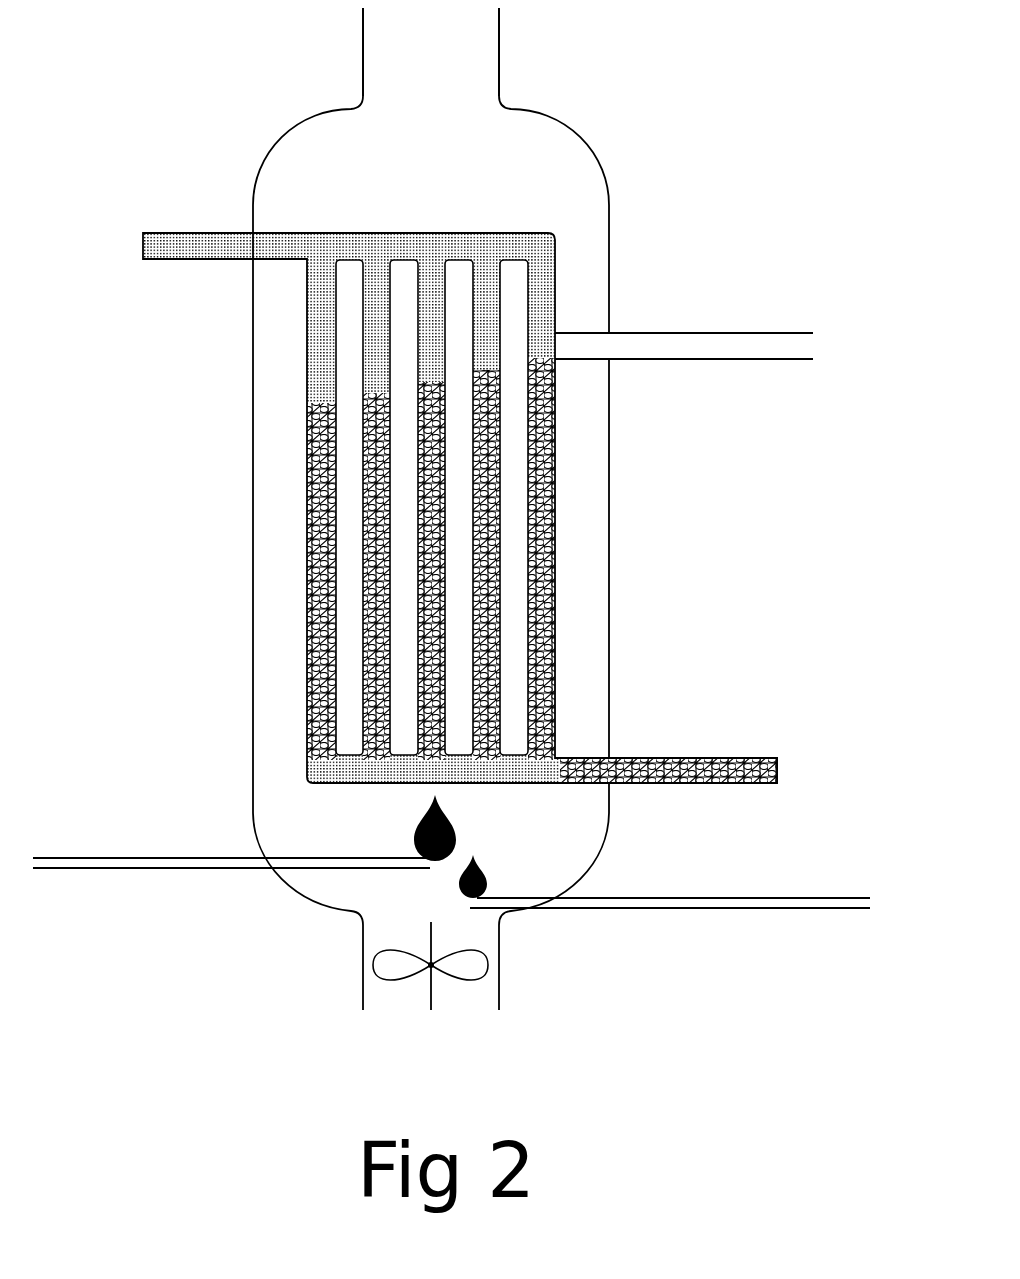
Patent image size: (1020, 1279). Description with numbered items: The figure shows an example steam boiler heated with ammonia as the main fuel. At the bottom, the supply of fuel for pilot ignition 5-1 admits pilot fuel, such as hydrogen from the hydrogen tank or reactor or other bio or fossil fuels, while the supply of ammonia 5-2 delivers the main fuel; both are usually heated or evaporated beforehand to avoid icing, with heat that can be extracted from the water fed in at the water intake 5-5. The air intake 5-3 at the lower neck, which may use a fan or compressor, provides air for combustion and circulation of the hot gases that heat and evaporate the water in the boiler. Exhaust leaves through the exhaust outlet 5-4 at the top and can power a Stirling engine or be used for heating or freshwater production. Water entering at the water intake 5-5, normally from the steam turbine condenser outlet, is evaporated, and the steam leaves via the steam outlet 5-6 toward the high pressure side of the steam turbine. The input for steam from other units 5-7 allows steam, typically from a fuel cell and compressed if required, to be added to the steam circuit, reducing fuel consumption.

The supply of fuel for pilot ignition 5-1 is at (682, 875).
The supply of ammonia 5-2 is at (232, 828).
The air intake 5-3 is at (430, 997).
The exhaust outlet 5-4 is at (431, 52).
The water intake 5-5 is at (679, 742).
The steam outlet 5-6 is at (450, 475).
The input for steam from other units 5-7 is at (684, 313).